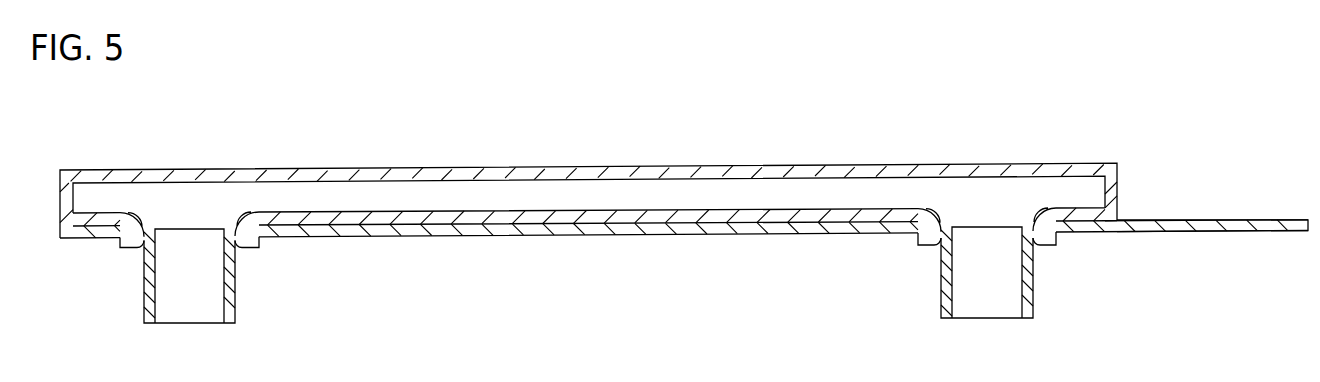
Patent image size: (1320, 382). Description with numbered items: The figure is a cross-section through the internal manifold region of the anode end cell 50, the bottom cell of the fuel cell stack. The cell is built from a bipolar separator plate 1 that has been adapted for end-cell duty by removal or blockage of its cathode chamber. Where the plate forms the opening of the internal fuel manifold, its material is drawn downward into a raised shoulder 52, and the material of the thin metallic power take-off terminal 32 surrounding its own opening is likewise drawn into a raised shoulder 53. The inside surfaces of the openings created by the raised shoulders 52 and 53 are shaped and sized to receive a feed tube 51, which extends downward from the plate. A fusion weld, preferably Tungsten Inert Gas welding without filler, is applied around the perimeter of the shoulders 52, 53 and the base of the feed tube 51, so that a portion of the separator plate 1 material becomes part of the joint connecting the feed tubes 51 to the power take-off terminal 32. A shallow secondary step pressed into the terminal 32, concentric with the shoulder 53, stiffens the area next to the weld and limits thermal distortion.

The bipolar separator plate 1 is at (618, 165).
The anode end cell 50 is at (882, 143).
The feed tube 51 is at (1032, 292).
The raised shoulder 52 is at (933, 247).
The raised shoulder 53 is at (922, 247).
The power take-off terminal 32 is at (1185, 220).